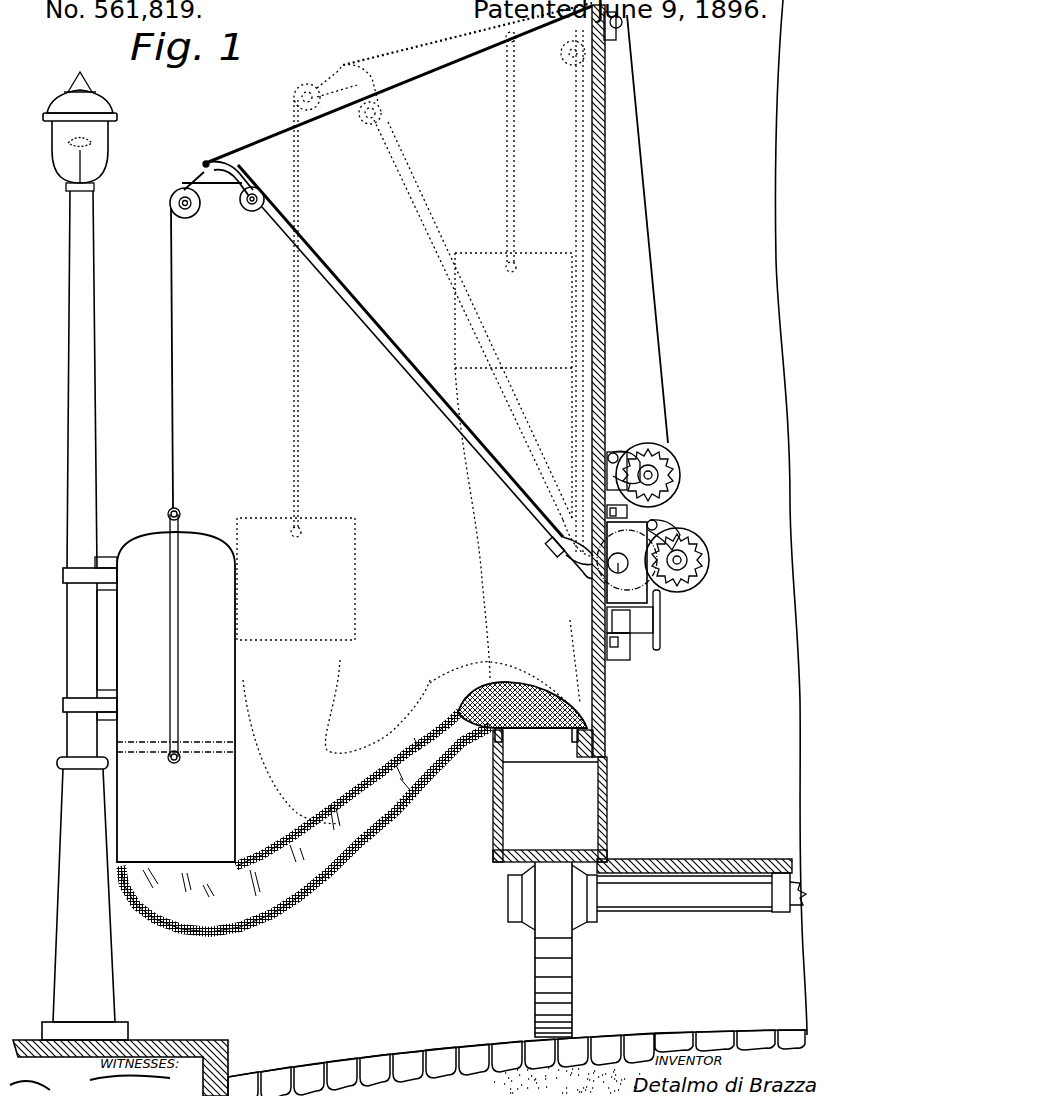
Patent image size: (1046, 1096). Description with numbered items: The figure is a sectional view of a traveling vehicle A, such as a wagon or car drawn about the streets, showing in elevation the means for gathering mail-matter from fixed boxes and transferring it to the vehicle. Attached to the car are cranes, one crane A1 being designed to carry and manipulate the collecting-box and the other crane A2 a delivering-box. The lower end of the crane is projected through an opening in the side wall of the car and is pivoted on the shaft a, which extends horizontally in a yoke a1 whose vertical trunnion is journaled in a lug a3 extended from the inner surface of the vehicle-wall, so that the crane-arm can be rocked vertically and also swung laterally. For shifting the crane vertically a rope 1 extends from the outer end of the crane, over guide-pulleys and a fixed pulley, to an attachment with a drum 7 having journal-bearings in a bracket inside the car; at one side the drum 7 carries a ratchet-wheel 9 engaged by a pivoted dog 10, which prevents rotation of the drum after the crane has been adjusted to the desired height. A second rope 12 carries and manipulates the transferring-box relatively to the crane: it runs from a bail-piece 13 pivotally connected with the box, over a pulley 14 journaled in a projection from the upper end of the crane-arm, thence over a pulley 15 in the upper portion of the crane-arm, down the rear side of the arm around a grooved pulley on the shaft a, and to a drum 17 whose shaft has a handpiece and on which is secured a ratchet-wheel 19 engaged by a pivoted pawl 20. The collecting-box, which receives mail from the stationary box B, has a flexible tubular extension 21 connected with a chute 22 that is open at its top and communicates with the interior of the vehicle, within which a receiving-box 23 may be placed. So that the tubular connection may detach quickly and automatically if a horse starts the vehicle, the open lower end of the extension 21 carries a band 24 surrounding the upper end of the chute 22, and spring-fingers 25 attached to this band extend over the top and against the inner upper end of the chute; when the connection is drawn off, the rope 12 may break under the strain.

The rope 1 is at (253, 146).
The drum 7 is at (682, 468).
The ratchet-wheel 9 is at (677, 492).
The pivoted dog 10 is at (623, 447).
The rope 12 is at (175, 418).
The bail-piece 13 is at (187, 592).
The pulley 14 is at (185, 219).
The pulley 15 is at (256, 213).
The drum 17 is at (706, 577).
The ratchet-wheel 19 is at (708, 552).
The pivoted pawl 20 is at (665, 527).
The flexible tubular extension 21 is at (328, 876).
The chute 22 is at (493, 768).
The receiving-box 23 is at (607, 778).
The band 24 is at (496, 737).
The spring-fingers 25 is at (572, 735).
The vehicle A is at (716, 351).
The crane A1 is at (428, 400).
The crane A2 is at (186, 812).
The stationary box B is at (117, 652).
The shaft a is at (627, 562).
The yoke a1 is at (660, 603).
The lug a3 is at (662, 642).